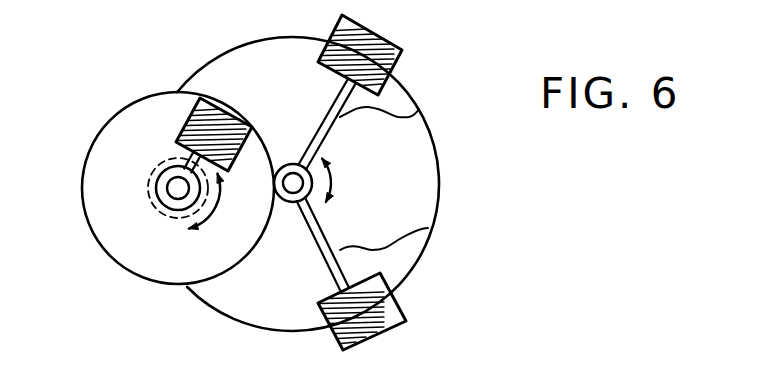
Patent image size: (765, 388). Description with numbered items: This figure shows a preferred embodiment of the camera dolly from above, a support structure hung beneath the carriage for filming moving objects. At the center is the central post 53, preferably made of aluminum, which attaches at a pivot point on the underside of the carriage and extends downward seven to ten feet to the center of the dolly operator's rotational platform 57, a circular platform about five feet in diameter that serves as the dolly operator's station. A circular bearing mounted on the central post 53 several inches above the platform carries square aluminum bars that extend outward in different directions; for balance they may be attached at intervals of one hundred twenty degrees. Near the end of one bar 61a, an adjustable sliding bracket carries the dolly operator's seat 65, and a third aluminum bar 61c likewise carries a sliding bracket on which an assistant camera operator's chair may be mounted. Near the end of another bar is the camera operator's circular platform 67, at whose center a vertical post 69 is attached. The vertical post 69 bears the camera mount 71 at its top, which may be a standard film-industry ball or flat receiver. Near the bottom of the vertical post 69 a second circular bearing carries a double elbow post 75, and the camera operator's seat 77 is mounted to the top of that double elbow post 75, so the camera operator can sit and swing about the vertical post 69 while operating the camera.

The central post 53 is at (291, 164).
The dolly operator's rotational platform 57 is at (408, 100).
The square aluminum bar 61a is at (428, 228).
The third aluminum bar 61c is at (419, 109).
The dolly operator's seat 65 is at (387, 40).
The camera operator's circular platform 67 is at (110, 118).
The vertical post 69 is at (162, 181).
The camera mount 71 is at (163, 206).
The double elbow post 75 is at (178, 146).
The camera operator's seat 77 is at (193, 100).